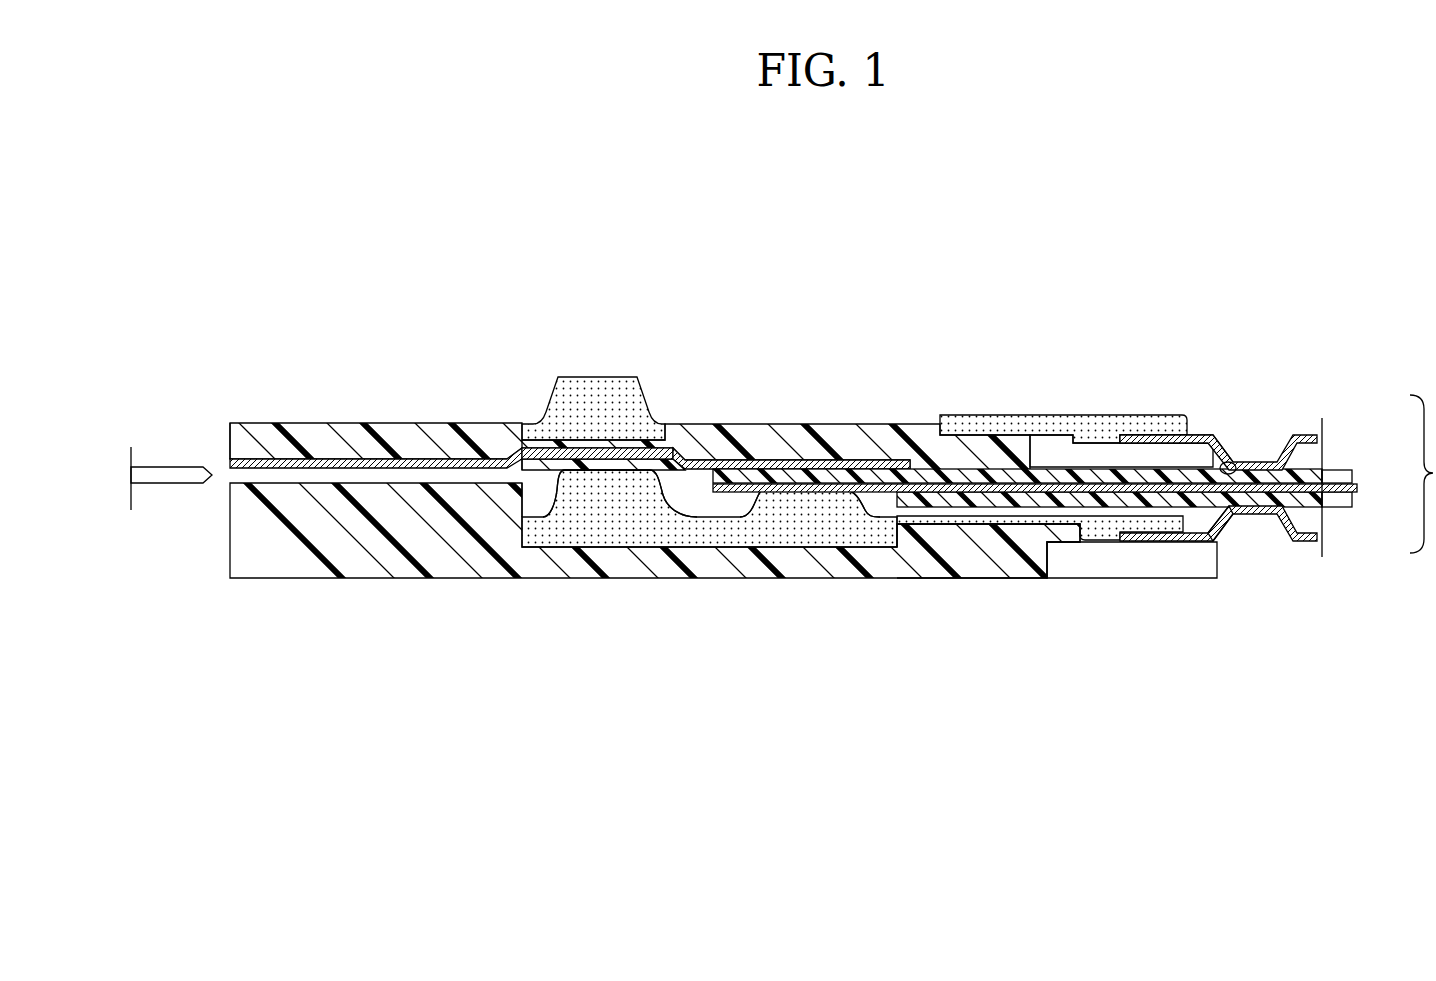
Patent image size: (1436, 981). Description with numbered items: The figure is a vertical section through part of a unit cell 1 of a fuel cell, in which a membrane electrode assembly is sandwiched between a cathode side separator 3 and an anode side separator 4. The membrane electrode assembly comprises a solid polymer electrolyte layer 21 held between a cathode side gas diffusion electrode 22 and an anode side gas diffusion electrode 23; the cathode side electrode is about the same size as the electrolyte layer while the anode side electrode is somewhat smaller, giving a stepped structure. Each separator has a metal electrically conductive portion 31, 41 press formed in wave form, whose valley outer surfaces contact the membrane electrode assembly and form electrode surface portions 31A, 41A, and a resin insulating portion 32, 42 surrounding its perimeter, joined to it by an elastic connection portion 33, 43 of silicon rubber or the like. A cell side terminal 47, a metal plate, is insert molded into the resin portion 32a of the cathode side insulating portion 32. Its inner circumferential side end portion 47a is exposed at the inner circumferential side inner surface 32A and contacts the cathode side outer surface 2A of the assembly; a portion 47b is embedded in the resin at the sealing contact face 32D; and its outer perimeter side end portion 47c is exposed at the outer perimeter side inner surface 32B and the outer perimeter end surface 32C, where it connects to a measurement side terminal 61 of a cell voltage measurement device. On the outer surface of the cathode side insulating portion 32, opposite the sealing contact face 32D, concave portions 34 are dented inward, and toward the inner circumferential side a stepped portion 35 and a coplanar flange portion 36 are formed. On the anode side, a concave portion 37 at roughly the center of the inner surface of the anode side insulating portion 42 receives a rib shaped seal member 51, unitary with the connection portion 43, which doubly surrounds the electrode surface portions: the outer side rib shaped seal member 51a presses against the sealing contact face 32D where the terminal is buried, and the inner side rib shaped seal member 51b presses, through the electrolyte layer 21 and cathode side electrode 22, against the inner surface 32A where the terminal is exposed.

The unit cell 1 is at (737, 259).
The cathode side outer surface 2A is at (763, 461).
The solid polymer electrolyte layer 21 is at (1347, 481).
The cathode side gas diffusion electrode 22 is at (1300, 468).
The anode side gas diffusion electrode 23 is at (1300, 508).
The cathode side separator 3 is at (763, 419).
The cathode side electrically conductive portion 31 is at (1294, 435).
The electrode surface portion 31A is at (1216, 410).
The cathode side insulating portion 32 is at (754, 491).
The inner circumferential side inner surface 32A is at (935, 480).
The outer perimeter side inner surface 32B is at (338, 480).
The outer perimeter end surface 32C is at (225, 432).
The sealing contact face 32D is at (552, 462).
The resin portion 32a is at (453, 437).
The connection portion 33 is at (1077, 415).
The concave portion 34 is at (648, 416).
The stepped portion 35 is at (983, 433).
The flange portion 36 is at (1058, 443).
The concave portion 37 is at (543, 517).
The anode side separator 4 is at (763, 564).
The anode side electrically conductive portion 41 is at (1302, 543).
The electrode surface portion 41A is at (1236, 550).
The anode side insulating portion 42 is at (1020, 580).
The connection portion 43 is at (1103, 544).
The cell side terminal 47 is at (763, 435).
The inner circumferential side end portion 47a is at (722, 462).
The embedded portion 47b is at (597, 456).
The outer perimeter side end portion 47c is at (375, 458).
The rib shaped seal member 51 is at (709, 581).
The outer side rib shaped seal member 51a is at (665, 495).
The inner side rib shaped seal member 51b is at (745, 503).
The measurement side terminal 61 is at (163, 465).